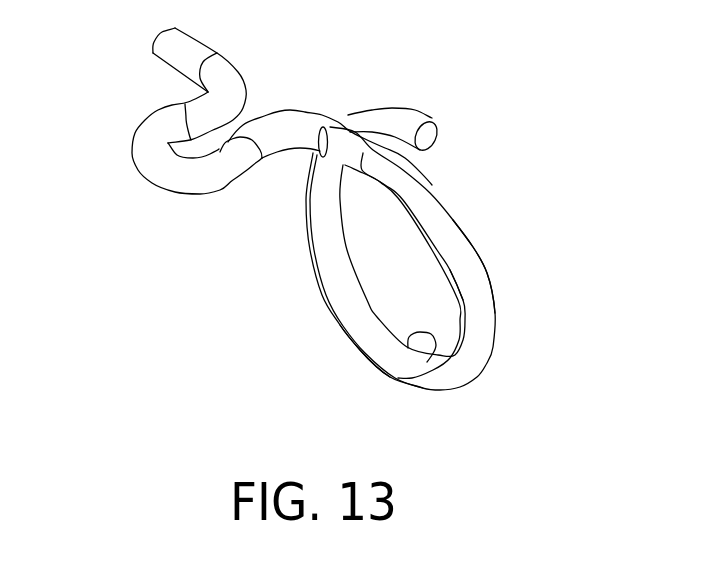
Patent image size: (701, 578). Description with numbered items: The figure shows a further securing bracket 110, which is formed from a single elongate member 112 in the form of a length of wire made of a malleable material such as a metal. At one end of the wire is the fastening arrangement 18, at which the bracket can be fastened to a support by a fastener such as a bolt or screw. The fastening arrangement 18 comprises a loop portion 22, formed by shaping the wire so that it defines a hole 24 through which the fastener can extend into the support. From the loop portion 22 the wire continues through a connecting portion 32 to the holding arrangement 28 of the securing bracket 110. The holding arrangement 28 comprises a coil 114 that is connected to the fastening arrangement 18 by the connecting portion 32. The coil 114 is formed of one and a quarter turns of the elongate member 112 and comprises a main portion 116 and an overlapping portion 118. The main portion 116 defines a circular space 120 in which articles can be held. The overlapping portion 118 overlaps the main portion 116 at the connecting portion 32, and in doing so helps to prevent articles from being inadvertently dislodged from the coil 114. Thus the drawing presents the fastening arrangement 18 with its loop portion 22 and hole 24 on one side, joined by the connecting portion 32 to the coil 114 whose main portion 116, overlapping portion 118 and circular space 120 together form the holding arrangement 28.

The fastening arrangement 18 is at (124, 148).
The loop portion 22 is at (148, 132).
The hole 24 is at (220, 153).
The holding arrangement 28 is at (466, 203).
The connecting portion 32 is at (348, 140).
The securing bracket 110 is at (284, 270).
The elongate member 112 is at (470, 350).
The coil 114 is at (378, 352).
The main portion 116 is at (473, 283).
The overlapping portion 118 is at (417, 120).
The circular space 120 is at (427, 362).